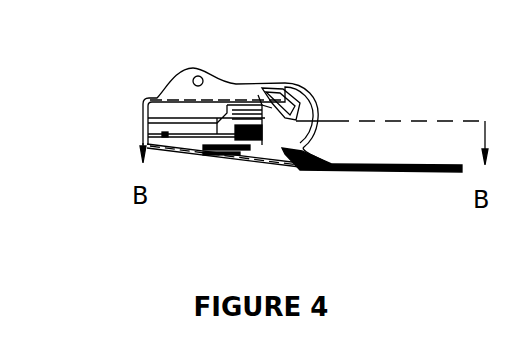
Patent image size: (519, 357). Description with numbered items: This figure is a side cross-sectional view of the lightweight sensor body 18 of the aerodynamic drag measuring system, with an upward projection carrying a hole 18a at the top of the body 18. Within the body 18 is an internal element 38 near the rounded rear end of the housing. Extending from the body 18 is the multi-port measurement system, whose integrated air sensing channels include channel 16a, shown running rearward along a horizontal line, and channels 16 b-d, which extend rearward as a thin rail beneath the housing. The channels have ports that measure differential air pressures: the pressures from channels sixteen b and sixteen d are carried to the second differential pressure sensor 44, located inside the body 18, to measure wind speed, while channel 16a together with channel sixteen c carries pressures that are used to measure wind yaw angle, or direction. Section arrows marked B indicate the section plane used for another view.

The sensor body 18 is at (140, 97).
The mounting hole 18a is at (197, 75).
The latch 38 is at (292, 103).
The integrated air sensing channel 16a is at (318, 120).
The second differential pressure sensor 44 is at (253, 133).
The integrated air sensing channels 16 b-d is at (400, 180).